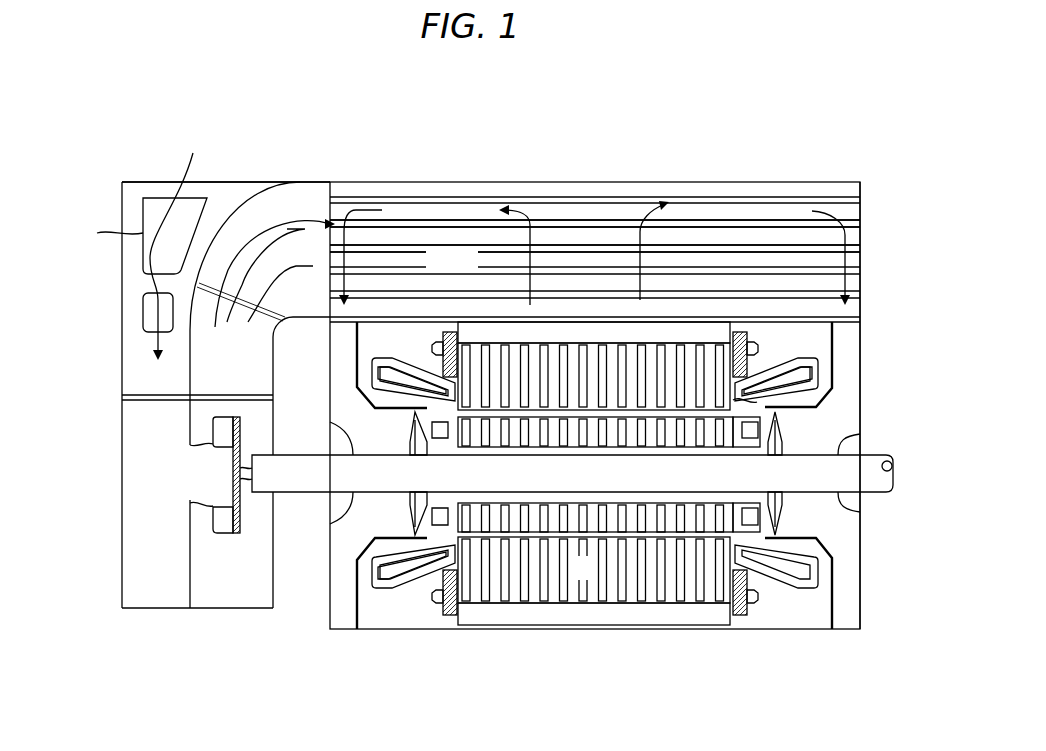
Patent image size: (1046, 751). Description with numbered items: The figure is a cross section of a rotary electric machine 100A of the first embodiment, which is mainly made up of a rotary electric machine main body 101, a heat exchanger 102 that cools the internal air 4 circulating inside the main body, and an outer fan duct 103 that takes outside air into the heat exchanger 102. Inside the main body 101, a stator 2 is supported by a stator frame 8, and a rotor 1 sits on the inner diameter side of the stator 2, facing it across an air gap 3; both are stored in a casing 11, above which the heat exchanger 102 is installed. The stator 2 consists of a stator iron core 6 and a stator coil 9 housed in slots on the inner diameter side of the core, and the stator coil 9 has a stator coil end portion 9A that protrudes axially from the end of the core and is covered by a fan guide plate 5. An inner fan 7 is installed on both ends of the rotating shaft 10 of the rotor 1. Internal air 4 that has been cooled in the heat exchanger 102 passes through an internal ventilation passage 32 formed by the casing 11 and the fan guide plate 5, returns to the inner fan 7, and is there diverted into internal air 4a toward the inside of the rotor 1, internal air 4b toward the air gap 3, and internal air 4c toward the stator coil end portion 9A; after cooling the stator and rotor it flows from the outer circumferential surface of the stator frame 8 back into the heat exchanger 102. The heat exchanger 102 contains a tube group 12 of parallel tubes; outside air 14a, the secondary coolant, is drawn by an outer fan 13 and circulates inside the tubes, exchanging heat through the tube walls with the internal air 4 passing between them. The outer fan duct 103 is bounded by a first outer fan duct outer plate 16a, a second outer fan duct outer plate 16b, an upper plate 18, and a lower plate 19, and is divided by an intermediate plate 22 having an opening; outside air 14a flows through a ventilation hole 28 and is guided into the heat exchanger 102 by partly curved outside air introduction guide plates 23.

The rotor 1 is at (572, 473).
The stator 2 is at (594, 473).
The air gap 3 is at (410, 427).
The internal air 4 is at (815, 210).
The internal air toward the inside of the rotor 4a is at (762, 441).
The internal air toward the air gap 4b is at (783, 413).
The internal air toward the stator coil end portion 4c is at (758, 397).
The fan guide plate 5 is at (833, 590).
The stator iron core 6 is at (740, 615).
The inner fan 7 is at (410, 517).
The stator frame 8 is at (725, 335).
The stator coil 9 is at (818, 398).
The stator coil end portion 9A is at (810, 365).
The rotating shaft 10 is at (790, 490).
The casing 11 is at (815, 317).
The tube group 12 is at (428, 223).
The outer fan 13 is at (227, 425).
The outside air 14a is at (243, 237).
The first outer fan duct outer plate 16a is at (122, 578).
The second outer fan duct outer plate 16b is at (275, 578).
The upper plate 18 is at (152, 181).
The lower plate 19 is at (218, 610).
The intermediate plate 22 is at (193, 568).
The outside air introduction guide plates 23 is at (287, 230).
The ventilation hole 28 is at (155, 220).
The internal ventilation passage 32 is at (848, 358).
The rotary electric machine 100A is at (534, 174).
The rotary electric machine main body 101 is at (860, 390).
The heat exchanger 102 is at (595, 259).
The outer fan duct 103 is at (240, 181).